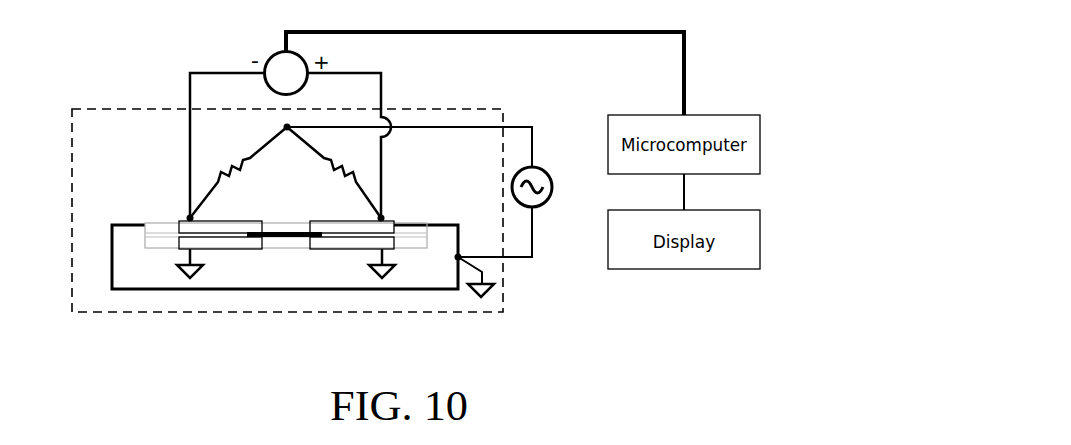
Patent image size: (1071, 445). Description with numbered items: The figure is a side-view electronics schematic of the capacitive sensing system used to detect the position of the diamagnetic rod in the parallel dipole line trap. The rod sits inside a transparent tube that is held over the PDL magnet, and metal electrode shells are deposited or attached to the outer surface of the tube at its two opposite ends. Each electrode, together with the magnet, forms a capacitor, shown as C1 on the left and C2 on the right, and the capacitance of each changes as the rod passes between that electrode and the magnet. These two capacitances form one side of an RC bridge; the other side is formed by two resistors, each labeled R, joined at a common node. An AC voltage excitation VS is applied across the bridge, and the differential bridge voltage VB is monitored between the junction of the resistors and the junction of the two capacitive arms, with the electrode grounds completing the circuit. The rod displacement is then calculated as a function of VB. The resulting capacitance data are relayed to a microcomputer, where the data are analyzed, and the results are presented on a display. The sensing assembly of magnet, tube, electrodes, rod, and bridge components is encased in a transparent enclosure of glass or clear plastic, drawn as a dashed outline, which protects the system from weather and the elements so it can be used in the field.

The differential bridge voltage VB is at (286, 73).
The AC voltage excitation VS is at (547, 194).
The resistor R is at (285, 172).
The first electrode capacitance C1 is at (179, 237).
The second electrode capacitance C2 is at (389, 237).
The transparent enclosure is at (124, 107).
The PDL magnet is at (133, 292).
The transparent tube is at (420, 250).
The electrode shell electrode is at (225, 252).
The diamagnetic rod is at (288, 243).